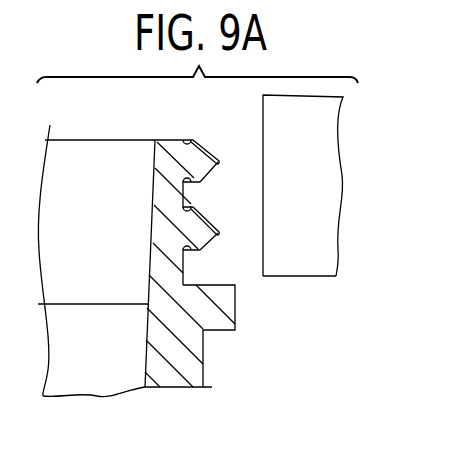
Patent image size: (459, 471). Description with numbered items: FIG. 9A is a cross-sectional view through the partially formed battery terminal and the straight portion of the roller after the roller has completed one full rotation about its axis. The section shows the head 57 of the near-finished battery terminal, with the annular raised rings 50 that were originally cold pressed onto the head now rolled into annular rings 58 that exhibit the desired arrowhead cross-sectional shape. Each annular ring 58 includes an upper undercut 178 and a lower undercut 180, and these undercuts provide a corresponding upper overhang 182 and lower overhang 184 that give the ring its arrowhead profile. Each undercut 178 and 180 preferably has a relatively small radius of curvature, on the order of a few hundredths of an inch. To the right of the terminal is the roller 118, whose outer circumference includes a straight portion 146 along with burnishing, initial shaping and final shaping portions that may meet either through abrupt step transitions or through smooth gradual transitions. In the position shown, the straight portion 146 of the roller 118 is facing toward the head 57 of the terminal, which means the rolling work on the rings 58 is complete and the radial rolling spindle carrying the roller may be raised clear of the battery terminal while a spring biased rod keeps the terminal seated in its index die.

The annular raised rings 50 is at (175, 393).
The head 57 is at (79, 140).
The annular rings 58 is at (219, 160).
The upper undercut 178 is at (189, 139).
The lower undercut 180 is at (186, 177).
The upper overhang 182 is at (196, 138).
The lower overhang 184 is at (203, 183).
The roller 118 is at (346, 129).
The straight portion 146 is at (300, 283).